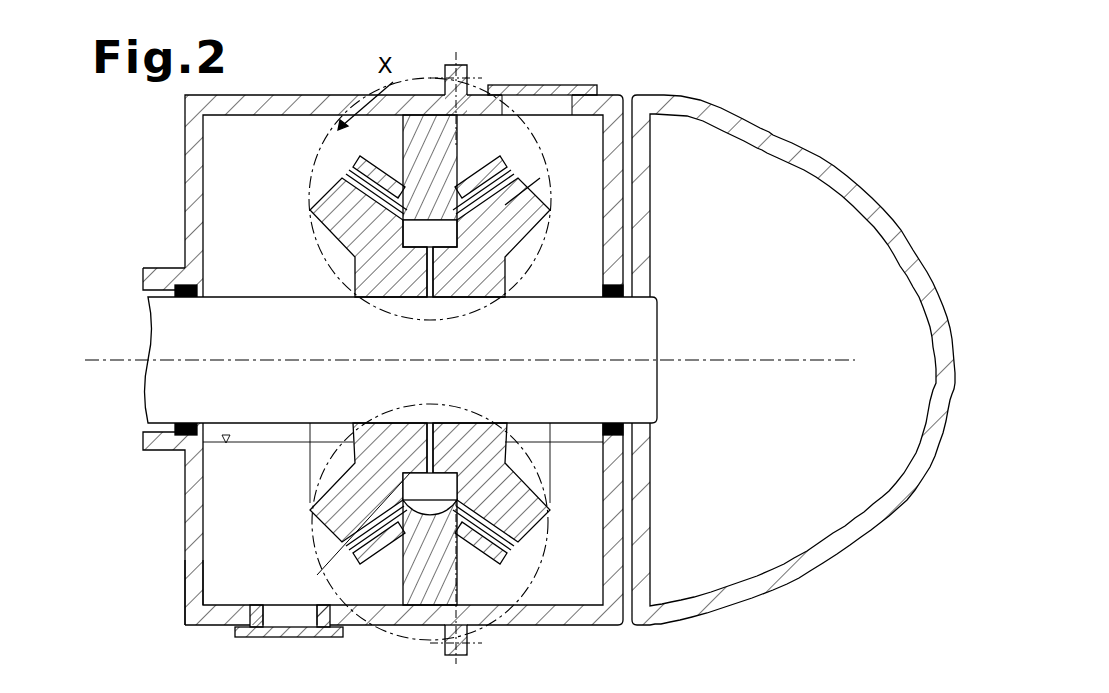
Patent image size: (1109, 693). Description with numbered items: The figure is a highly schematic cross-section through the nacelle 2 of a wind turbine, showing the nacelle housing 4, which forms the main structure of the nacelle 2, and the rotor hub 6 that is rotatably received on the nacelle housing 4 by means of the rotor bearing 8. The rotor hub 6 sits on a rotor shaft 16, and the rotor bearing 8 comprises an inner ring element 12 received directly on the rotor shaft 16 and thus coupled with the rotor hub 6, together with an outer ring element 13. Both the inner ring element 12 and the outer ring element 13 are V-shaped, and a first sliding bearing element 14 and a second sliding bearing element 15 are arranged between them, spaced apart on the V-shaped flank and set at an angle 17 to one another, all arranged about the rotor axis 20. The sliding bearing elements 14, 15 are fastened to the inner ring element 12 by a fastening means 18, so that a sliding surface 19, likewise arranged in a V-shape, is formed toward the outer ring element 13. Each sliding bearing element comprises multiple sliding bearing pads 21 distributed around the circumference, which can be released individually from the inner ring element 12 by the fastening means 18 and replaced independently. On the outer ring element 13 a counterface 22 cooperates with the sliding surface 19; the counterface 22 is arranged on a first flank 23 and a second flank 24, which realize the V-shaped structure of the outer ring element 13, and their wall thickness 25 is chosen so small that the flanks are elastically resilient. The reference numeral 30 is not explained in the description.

The nacelle 2 is at (788, 78).
The nacelle housing 4 is at (188, 590).
The rotor hub 6 is at (820, 567).
The rotor bearing 8 is at (335, 113).
The inner ring element 12 is at (387, 437).
The outer ring element 13 is at (330, 568).
The first sliding bearing element 14 is at (354, 442).
The second sliding bearing element 15 is at (548, 506).
The rotor shaft 16 is at (160, 350).
The angle 17 is at (405, 505).
The fastening means 18 is at (235, 632).
The sliding surface 19 is at (368, 566).
The rotor axis 20 is at (840, 357).
The sliding bearing pads 21 is at (345, 175).
The counterface 22 is at (335, 195).
The first flank 23 is at (395, 160).
The second flank 24 is at (470, 185).
The wall thickness 25 is at (515, 207).
The lower contact strip 30 is at (343, 554).